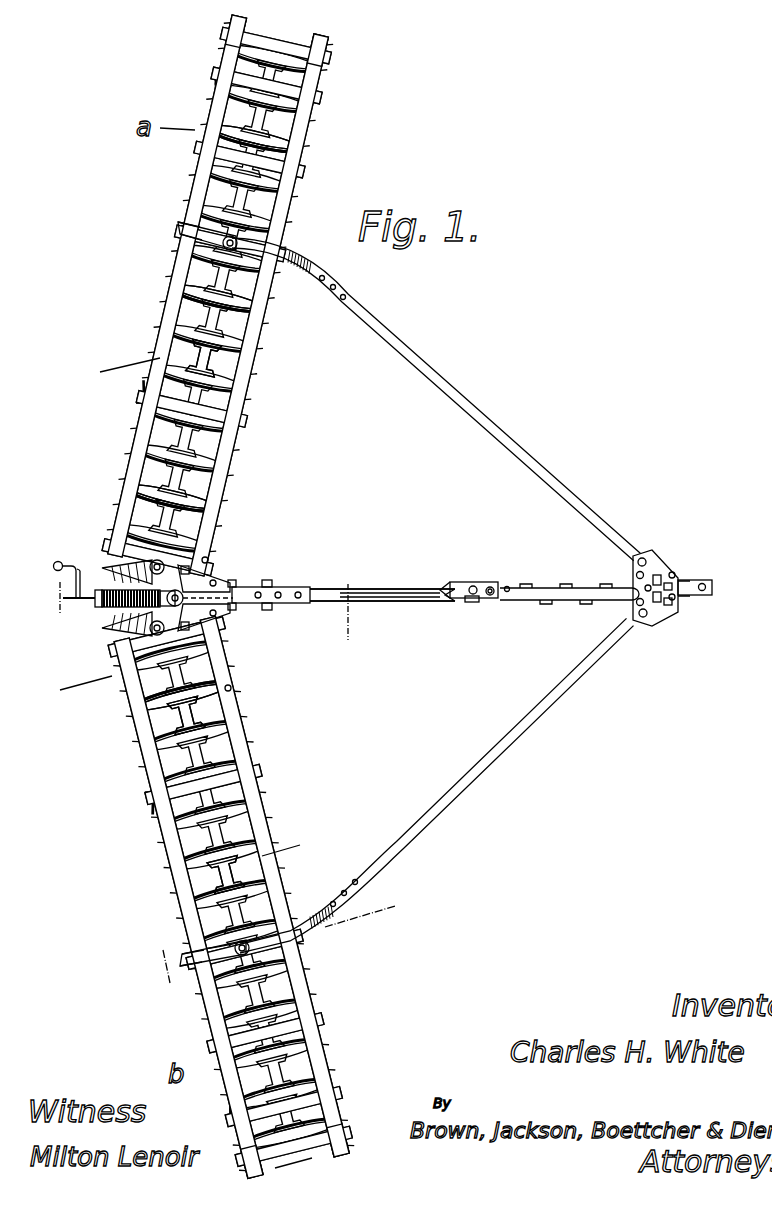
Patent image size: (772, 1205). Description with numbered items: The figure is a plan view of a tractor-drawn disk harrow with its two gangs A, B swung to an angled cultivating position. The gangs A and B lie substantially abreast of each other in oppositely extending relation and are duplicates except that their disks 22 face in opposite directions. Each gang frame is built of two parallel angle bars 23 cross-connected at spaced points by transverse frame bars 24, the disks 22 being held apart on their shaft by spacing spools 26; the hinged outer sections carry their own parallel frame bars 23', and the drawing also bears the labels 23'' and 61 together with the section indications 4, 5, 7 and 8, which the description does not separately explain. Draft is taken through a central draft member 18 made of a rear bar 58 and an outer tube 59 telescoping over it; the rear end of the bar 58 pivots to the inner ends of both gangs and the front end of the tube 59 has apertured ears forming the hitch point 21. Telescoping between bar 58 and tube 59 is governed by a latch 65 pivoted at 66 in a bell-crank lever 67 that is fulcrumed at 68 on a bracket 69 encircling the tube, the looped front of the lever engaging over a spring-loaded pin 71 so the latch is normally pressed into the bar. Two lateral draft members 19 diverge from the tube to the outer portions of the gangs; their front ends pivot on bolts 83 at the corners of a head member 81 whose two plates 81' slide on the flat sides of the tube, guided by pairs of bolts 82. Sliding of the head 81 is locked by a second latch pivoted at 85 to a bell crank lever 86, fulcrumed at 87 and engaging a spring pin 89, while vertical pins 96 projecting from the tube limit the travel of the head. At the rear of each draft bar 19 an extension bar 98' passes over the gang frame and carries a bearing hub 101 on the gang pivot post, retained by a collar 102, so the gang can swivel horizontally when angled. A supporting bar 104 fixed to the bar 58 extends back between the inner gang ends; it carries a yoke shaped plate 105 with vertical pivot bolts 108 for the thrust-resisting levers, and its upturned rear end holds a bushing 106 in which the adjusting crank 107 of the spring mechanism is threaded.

The gang A is at (160, 268).
The gang B is at (155, 888).
The central draft member 18 is at (425, 586).
The lateral draft member 19 is at (520, 452).
The hitch point 21 is at (713, 588).
The disk 22 is at (280, 140).
The angle bar 23 is at (220, 596).
The frame bar of outer section 23' is at (272, 49).
The lower rail end extension 23'' is at (289, 1135).
The transverse frame bar 24 is at (265, 238).
The spacing spool 26 is at (210, 352).
The bar 58 is at (400, 601).
The outer tube 59 is at (515, 602).
The hub bracket ear 61 is at (212, 572).
The latch 65 is at (477, 582).
The pivotal connection 66 is at (452, 600).
The bell-crank lever 67 is at (472, 584).
The fulcrum 68 is at (470, 603).
The bracket 69 is at (490, 585).
The pin 71 is at (507, 587).
The head member 81 is at (673, 558).
The plate 81' is at (700, 560).
The bolt 82 is at (636, 575).
The bolt 83 is at (643, 557).
The pivotal connection 85 is at (650, 591).
The bell crank lever 86 is at (652, 602).
The fulcrum 87 is at (668, 605).
The pin 89 is at (684, 598).
The vertical pin 96 is at (488, 596).
The extension bar 98' is at (360, 601).
The bearing hub 101 is at (222, 233).
The collar 102 is at (185, 230).
The supporting bar 104 is at (290, 586).
The yoke shaped plate 105 is at (245, 583).
The bushing 106 is at (95, 610).
The adjusting crank 107 is at (52, 566).
The vertical pivot bolt 108 is at (205, 558).
The section line 4- 4 is at (110, 527).
The section line 5- 5 is at (201, 613).
The section line 7- 7 is at (278, 940).
The section line 8- 8 is at (287, 1001).